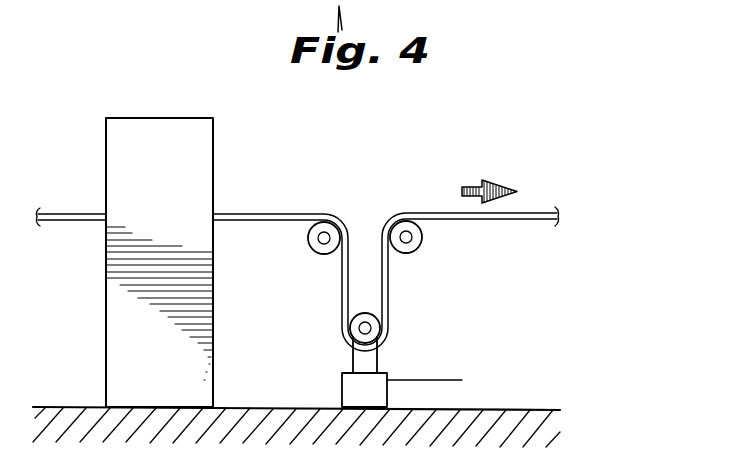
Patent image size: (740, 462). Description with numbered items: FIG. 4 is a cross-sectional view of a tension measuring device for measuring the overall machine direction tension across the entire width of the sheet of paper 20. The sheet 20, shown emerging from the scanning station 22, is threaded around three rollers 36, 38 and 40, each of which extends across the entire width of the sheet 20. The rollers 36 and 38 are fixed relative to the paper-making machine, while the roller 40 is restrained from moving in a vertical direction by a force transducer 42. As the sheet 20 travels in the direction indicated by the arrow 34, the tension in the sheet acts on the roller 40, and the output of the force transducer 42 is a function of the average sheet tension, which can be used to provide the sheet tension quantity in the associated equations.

The sheet of paper 20 is at (265, 214).
The scanning station 22 is at (106, 178).
The direction of strip travel 34 is at (372, 210).
The roller 36 is at (317, 253).
The roller 38 is at (418, 252).
The roller 40 is at (376, 316).
The force transducer 42 is at (341, 384).